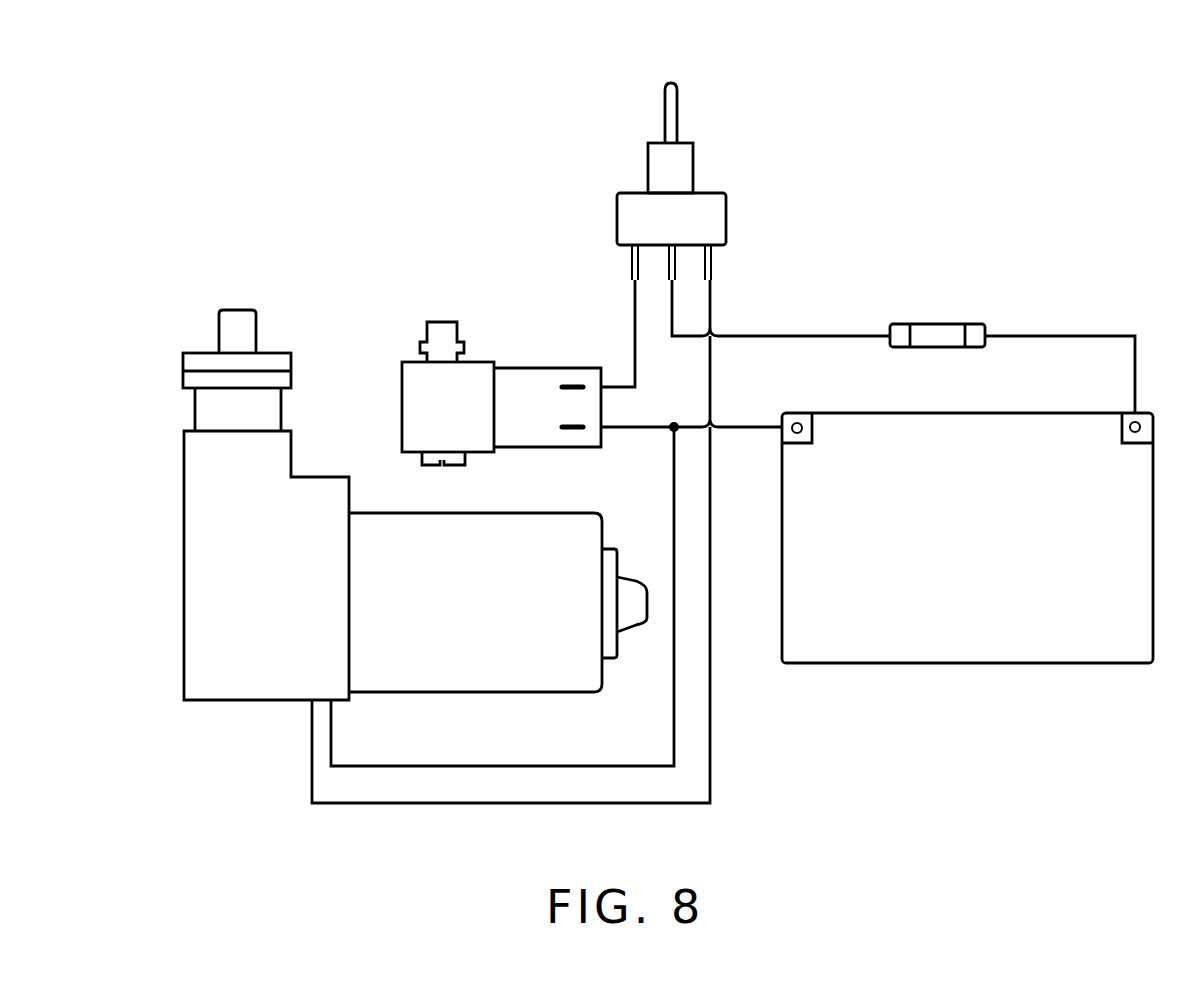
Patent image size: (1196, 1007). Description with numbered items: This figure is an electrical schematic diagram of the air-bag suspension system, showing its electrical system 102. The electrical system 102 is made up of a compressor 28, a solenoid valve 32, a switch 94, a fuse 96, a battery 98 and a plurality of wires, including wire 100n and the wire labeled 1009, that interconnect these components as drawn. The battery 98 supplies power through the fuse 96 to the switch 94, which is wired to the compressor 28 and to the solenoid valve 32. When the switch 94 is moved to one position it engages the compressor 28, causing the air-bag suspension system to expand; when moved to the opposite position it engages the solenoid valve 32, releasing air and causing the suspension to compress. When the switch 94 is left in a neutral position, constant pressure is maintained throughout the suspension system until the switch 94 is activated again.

The electrical system 102 is at (313, 153).
The compressor 28 is at (266, 505).
The solenoid valve 32 is at (482, 430).
The switch 94 is at (728, 197).
The fuse 96 is at (932, 325).
The battery 98 is at (1000, 531).
The wire 1009 is at (635, 305).
The wire 100n is at (712, 762).